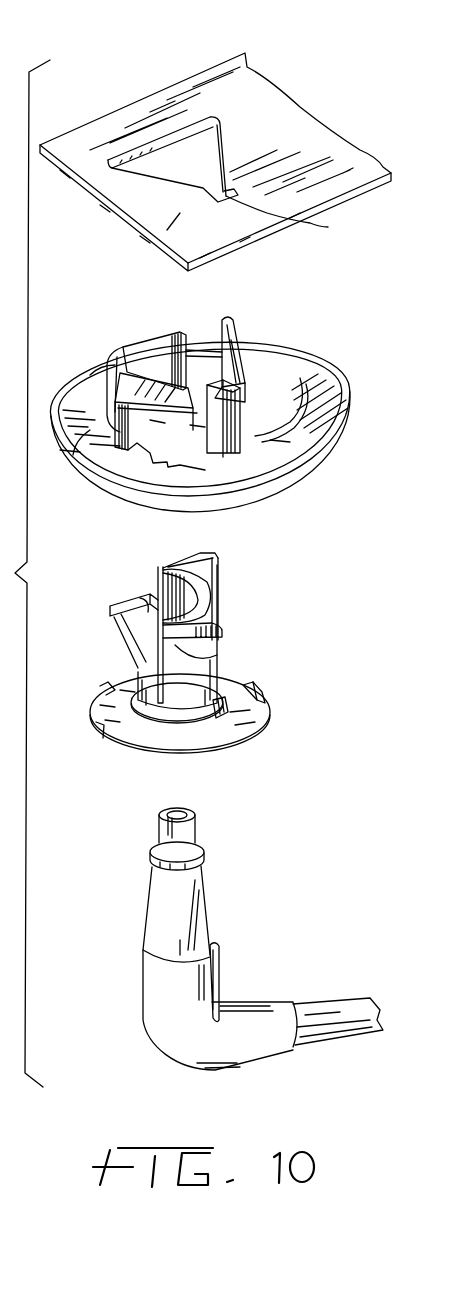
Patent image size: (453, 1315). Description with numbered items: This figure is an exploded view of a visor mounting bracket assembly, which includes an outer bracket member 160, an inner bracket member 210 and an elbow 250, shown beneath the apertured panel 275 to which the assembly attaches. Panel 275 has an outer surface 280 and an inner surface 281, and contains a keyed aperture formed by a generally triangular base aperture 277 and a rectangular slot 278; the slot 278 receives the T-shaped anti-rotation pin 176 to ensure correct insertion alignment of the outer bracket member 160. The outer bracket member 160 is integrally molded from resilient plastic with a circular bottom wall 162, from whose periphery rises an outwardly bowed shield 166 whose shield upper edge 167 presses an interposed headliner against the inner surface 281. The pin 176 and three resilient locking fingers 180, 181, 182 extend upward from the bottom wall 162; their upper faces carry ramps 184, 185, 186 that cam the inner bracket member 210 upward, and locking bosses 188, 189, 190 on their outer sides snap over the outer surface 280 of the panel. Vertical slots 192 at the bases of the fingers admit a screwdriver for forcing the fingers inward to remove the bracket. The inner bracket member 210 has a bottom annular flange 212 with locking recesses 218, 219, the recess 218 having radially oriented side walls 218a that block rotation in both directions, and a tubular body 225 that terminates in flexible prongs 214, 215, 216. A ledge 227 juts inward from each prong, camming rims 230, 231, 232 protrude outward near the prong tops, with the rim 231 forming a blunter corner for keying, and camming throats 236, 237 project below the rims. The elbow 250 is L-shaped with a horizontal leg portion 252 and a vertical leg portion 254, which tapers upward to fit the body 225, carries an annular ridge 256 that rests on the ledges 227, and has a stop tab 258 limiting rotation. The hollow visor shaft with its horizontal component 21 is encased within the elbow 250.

The apertured panel 275 is at (305, 160).
The base aperture 277 is at (193, 150).
The rectangular slot 278 is at (299, 218).
The outer surface 280 is at (125, 117).
The inner surface 281 is at (153, 240).
The outer bracket member 160 is at (378, 385).
The bottom wall 162 is at (90, 428).
The shield 166 is at (307, 378).
The shield upper edge 167 is at (280, 348).
The anti-rotation pin 176 is at (297, 458).
The locking finger 180 is at (230, 328).
The locking finger 181 is at (233, 432).
The locking finger 182 is at (160, 355).
The ramp 184 is at (222, 315).
The ramp 185 is at (200, 370).
The ramp 186 is at (113, 360).
The locking boss 188 is at (308, 390).
The locking boss 189 is at (143, 410).
The locking boss 190 is at (90, 370).
The vertical slot 192 is at (167, 460).
The inner bracket member 210 is at (348, 695).
The bottom annular flange 212 is at (117, 737).
The prong 214 is at (218, 597).
The prong 215 is at (212, 706).
The prong 216 is at (143, 670).
The locking recess 218 is at (253, 683).
The radially oriented side walls 218a is at (248, 687).
The locking recess 219 is at (100, 693).
The tubular body 225 is at (215, 707).
The ledge 227 is at (178, 615).
The camming rim 230 is at (208, 553).
The camming rim 231 is at (212, 625).
The camming rim 232 is at (128, 600).
The camming throat 236 is at (212, 652).
The camming throat 237 is at (138, 643).
The elbow 250 is at (322, 895).
The horizontal leg portion 252 is at (258, 1048).
The vertical leg portion 254 is at (150, 985).
The annular ridge 256 is at (150, 852).
The stop tab 258 is at (221, 958).
The horizontal component 21 is at (355, 1035).